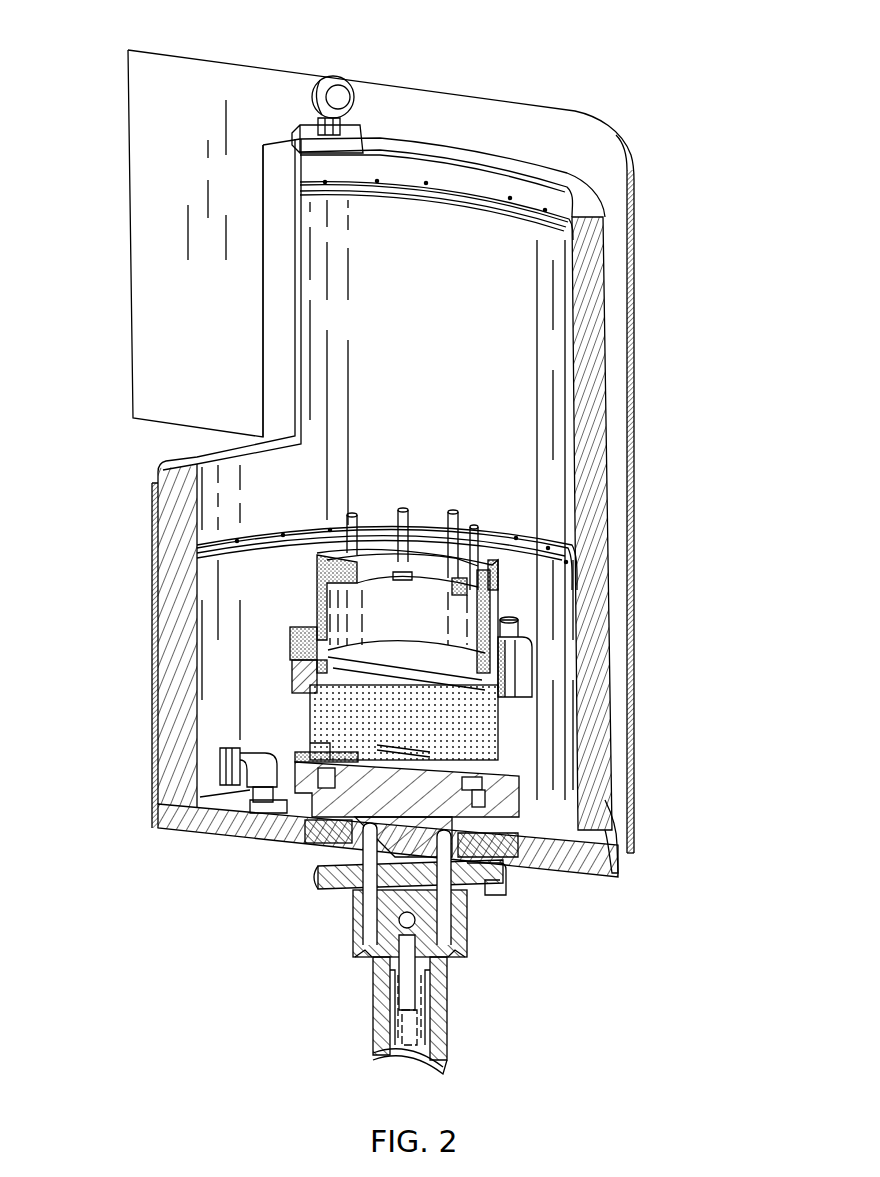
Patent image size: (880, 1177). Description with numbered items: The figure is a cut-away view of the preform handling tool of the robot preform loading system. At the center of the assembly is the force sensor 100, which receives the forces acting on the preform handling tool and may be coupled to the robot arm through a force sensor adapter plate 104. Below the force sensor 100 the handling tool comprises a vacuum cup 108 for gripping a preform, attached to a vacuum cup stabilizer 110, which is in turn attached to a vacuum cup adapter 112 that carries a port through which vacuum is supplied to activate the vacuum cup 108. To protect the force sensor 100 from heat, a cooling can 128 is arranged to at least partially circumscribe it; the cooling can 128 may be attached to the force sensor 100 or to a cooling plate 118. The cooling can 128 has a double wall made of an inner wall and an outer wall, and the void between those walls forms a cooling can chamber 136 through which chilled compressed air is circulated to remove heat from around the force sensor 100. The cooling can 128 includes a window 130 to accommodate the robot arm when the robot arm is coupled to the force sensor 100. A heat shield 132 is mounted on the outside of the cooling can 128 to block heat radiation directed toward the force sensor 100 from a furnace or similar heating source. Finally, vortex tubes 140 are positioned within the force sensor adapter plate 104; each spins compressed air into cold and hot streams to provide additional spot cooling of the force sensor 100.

The force sensor 100 is at (485, 733).
The force sensor adapter plate 104 is at (478, 590).
The vacuum cup 108 is at (408, 1053).
The vacuum cup stabilizer 110 is at (450, 1008).
The vacuum cup adapter 112 is at (463, 923).
The cooling plate 118 is at (483, 820).
The cooling can 128 is at (580, 197).
The window 130 is at (200, 458).
The heat shield 132 is at (503, 117).
The cooling can chamber 136 is at (590, 380).
The vortex tubes 140 is at (480, 532).